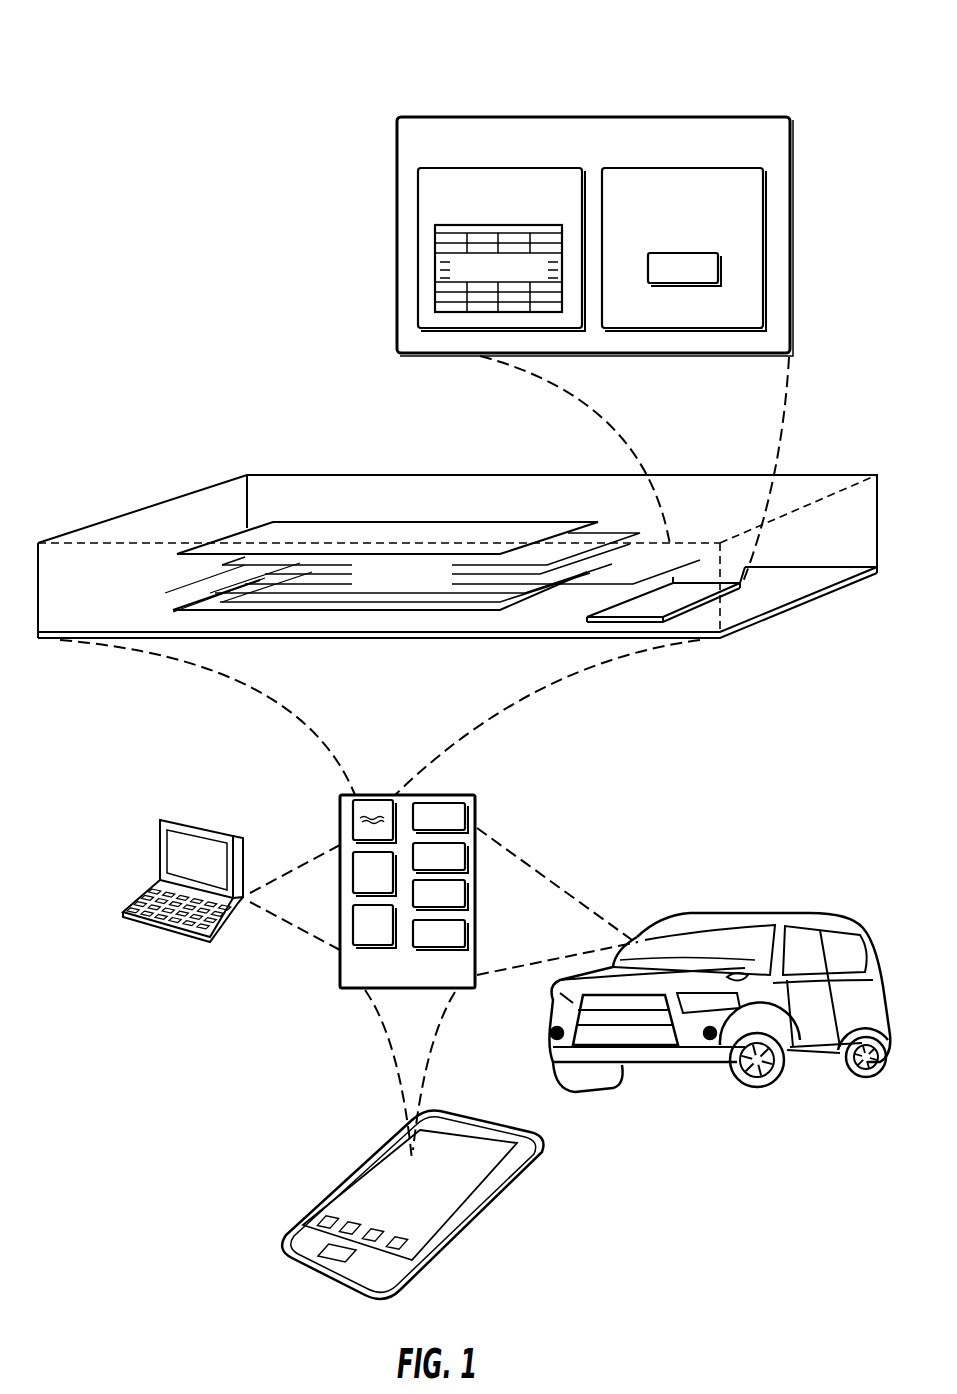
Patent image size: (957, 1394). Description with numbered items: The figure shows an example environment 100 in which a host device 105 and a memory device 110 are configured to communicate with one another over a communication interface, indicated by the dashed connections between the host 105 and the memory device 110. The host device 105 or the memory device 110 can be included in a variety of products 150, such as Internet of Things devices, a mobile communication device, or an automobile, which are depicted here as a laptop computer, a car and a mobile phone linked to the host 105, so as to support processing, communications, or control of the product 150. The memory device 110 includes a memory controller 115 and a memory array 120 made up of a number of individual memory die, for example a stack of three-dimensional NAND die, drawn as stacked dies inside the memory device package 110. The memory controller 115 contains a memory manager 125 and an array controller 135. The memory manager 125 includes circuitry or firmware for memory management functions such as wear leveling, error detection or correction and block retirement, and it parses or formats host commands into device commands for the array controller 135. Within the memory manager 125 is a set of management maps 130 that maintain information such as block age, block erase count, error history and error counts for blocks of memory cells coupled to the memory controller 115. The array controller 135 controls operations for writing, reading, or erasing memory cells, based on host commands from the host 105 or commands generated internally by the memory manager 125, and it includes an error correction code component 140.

The environment 100 is at (767, 42).
The host device 105 is at (345, 800).
The memory device 110 is at (190, 495).
The memory controller 115 is at (397, 120).
The memory array 120 is at (470, 517).
The memory manager 125 is at (420, 205).
The management maps 130 is at (437, 263).
The array controller 135 is at (766, 201).
The error correction code (ECC) component 140 is at (720, 272).
The products 150 is at (165, 818).